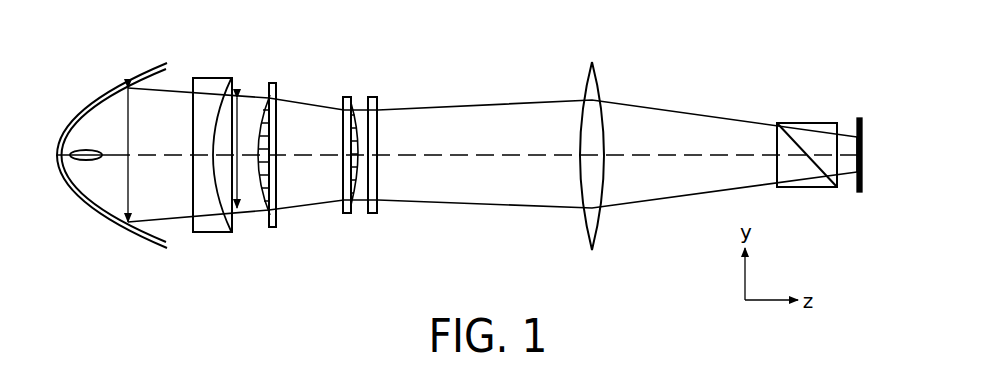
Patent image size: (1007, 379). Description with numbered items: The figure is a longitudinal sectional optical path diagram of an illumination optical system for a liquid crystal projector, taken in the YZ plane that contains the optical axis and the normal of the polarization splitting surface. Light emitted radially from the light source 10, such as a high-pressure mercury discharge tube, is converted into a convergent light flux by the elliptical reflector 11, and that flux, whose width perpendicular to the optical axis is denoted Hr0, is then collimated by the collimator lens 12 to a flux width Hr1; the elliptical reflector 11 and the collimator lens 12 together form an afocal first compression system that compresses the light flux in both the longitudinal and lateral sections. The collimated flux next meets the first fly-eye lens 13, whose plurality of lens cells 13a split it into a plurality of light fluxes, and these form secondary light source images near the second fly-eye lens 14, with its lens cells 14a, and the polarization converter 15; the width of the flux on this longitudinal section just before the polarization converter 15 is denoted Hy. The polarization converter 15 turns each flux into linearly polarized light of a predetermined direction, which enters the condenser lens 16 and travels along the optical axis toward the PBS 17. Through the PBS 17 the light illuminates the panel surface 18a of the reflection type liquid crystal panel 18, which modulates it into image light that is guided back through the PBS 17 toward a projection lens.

The light source 10 is at (76, 162).
The elliptical reflector 11 is at (108, 90).
The collimator lens 12 is at (208, 88).
The first fly-eye lens 13 is at (275, 98).
The lens cells 13a is at (263, 201).
The second fly-eye lens 14 is at (354, 105).
The lens cells 14a is at (357, 201).
The polarization converter 15 is at (380, 106).
The condenser lens 16 is at (594, 88).
The polarization beam splitter 17 is at (813, 128).
The liquid crystal panel 18 is at (862, 128).
The panel surface 18a is at (853, 180).
The light flux width reflected by the elliptical reflector Hr0 is at (124, 198).
The light flux width collimated by the collimator lens Hr1 is at (233, 185).
The light flux width on the YZ section just before the polarization converter Hy is at (370, 182).